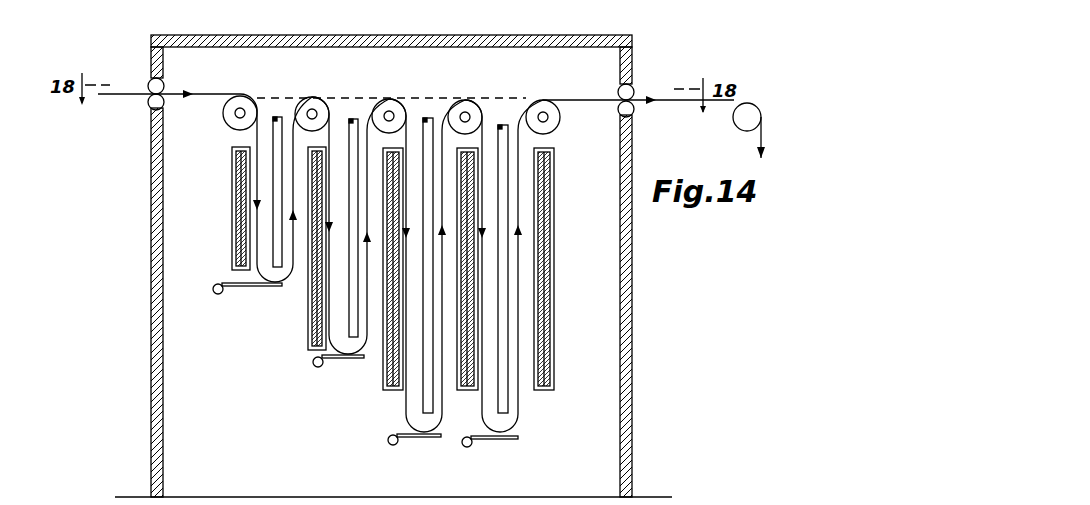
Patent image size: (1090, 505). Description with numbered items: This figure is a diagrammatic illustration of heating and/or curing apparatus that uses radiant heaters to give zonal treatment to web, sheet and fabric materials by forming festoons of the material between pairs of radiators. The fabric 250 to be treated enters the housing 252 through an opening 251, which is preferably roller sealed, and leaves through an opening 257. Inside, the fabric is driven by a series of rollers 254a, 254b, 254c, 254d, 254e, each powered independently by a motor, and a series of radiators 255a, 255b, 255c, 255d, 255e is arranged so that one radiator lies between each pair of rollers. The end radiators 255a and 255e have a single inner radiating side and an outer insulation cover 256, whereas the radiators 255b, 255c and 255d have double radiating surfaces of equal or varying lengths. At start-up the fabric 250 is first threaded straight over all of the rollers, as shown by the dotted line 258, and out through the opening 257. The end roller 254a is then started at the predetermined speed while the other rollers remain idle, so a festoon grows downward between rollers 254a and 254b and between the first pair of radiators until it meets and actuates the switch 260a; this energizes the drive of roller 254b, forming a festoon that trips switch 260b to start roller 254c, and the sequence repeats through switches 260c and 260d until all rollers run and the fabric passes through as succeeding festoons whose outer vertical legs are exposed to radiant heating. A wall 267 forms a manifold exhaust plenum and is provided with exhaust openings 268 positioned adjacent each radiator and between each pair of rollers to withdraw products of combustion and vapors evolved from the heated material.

The fabric 250 is at (149, 83).
The opening 251 is at (149, 104).
The housing 252 is at (486, 38).
The roller 254a is at (242, 97).
The roller 254b is at (314, 97).
The roller 254c is at (389, 100).
The roller 254d is at (468, 101).
The roller 254e is at (546, 101).
The radiator 255a is at (243, 161).
The radiator 255b is at (310, 258).
The radiator 255c is at (384, 365).
The radiator 255d is at (464, 388).
The radiator 255e is at (537, 392).
The insulation cover 256 is at (238, 253).
The opening 257 is at (631, 111).
The dotted line 258 is at (295, 93).
The switch 260a is at (242, 287).
The switch 260b is at (338, 359).
The switch 260c is at (416, 438).
The switch 260d is at (492, 440).
The wall 267 is at (356, 458).
The exhaust openings 268 is at (282, 130).